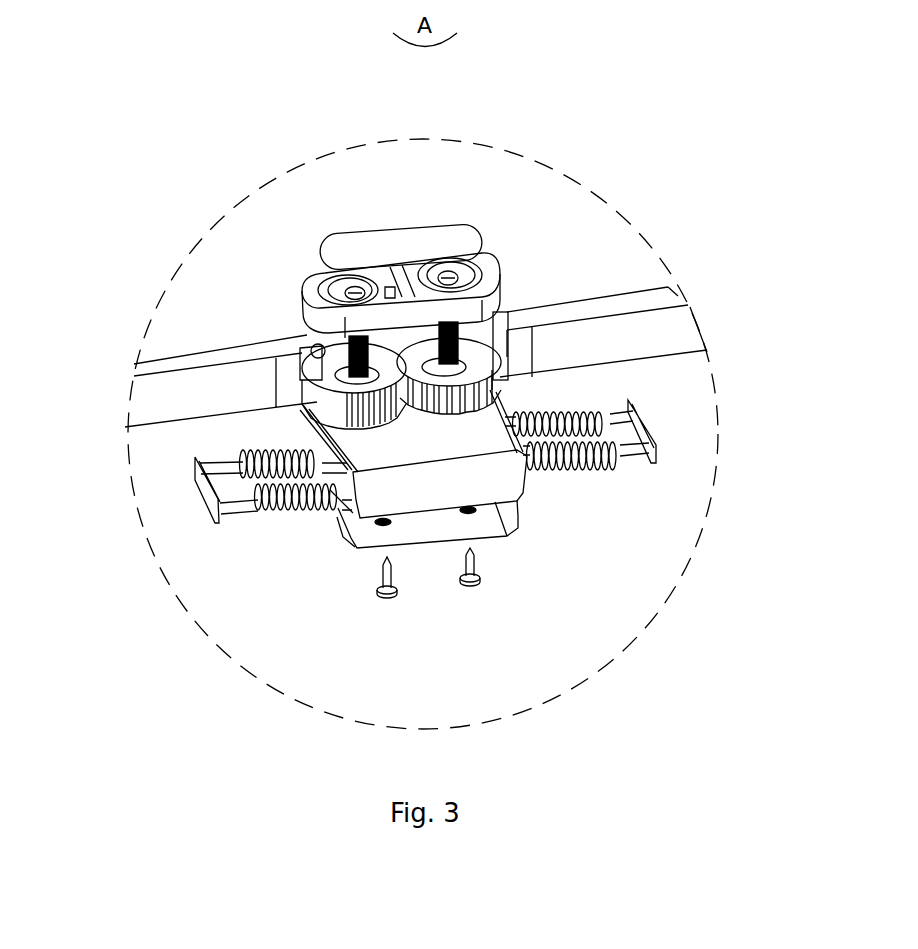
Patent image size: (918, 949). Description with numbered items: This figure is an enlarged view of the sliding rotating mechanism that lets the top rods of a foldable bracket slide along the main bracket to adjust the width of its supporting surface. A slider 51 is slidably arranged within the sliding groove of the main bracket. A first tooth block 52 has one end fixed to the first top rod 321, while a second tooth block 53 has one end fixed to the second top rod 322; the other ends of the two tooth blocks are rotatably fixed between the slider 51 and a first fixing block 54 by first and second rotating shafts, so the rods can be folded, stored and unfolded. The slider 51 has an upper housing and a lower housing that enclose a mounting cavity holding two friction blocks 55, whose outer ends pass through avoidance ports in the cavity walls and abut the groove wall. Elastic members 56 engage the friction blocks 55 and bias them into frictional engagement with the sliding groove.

The slider 51 is at (370, 500).
The first tooth block 52 is at (300, 345).
The second tooth block 53 is at (480, 353).
The first fixing block 54 is at (489, 258).
The friction block 55 is at (198, 483).
The elastic member 56 is at (340, 505).
The first top rod 321 is at (153, 360).
The second top rod 322 is at (666, 286).